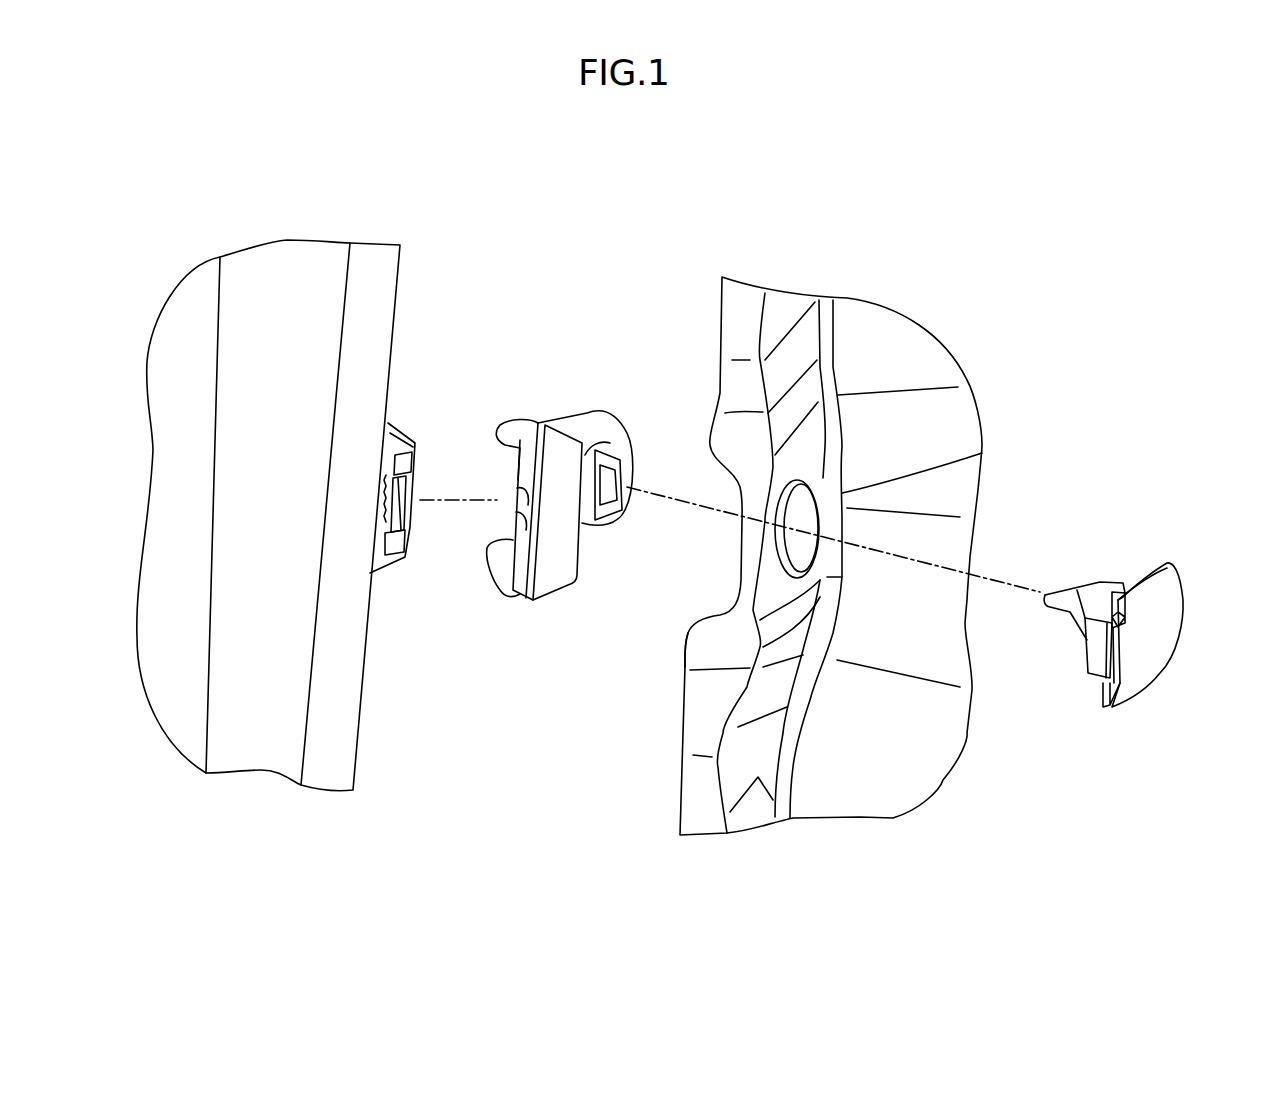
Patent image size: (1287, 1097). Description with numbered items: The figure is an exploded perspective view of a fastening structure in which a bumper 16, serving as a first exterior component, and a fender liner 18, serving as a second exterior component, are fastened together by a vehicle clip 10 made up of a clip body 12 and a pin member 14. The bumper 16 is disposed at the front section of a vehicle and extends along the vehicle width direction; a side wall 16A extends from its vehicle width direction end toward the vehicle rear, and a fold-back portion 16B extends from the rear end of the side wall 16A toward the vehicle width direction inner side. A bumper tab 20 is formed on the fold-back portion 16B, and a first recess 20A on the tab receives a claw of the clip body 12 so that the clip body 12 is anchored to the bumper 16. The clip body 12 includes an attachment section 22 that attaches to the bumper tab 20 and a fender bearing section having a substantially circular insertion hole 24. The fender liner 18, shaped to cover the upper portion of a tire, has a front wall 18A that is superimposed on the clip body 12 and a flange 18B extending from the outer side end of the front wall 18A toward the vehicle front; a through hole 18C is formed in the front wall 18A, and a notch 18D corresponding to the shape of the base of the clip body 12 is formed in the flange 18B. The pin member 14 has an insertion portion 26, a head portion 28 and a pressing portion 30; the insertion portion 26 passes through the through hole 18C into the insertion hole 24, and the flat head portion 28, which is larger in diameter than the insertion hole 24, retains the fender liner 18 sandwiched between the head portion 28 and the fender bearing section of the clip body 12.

The vehicle clip 10 is at (847, 522).
The clip body 12 is at (566, 449).
The pin member 14 is at (1144, 605).
The bumper 16 is at (309, 467).
The side wall 16A is at (262, 272).
The fold-back portion 16B is at (383, 257).
The fender liner 18 is at (826, 514).
The front wall 18A is at (797, 340).
The flange 18B is at (745, 298).
The through hole 18C is at (818, 495).
The notch 18D is at (703, 618).
The bumper tab 20 is at (438, 486).
The first recess 20A is at (410, 523).
The attachment section 22 is at (510, 485).
The insertion hole 24 is at (617, 500).
The insertion portion 26 is at (1057, 592).
The head portion 28 is at (1183, 600).
The pressing portion 30 is at (1090, 680).